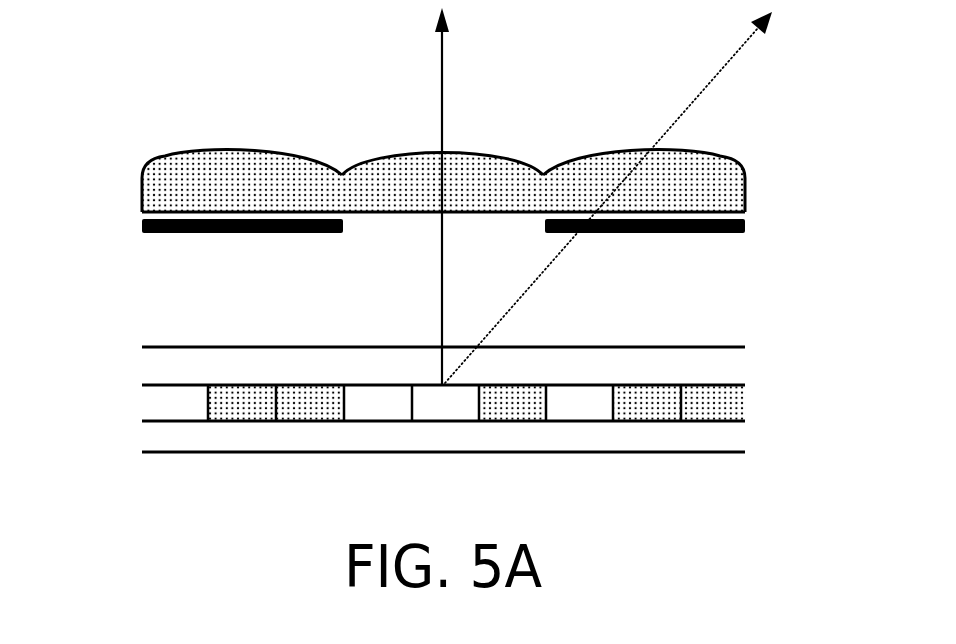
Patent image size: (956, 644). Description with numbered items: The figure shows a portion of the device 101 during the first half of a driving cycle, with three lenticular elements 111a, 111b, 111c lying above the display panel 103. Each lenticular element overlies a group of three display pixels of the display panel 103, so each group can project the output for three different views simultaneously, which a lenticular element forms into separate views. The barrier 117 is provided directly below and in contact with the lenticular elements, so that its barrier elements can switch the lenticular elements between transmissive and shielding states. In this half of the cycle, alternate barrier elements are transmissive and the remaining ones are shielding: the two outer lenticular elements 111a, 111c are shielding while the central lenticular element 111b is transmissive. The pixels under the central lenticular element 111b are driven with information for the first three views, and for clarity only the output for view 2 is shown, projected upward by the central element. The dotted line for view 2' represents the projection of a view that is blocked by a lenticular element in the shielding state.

The device 101 is at (137, 107).
The lenticular element 111a is at (240, 150).
The central lenticular element 111b is at (405, 150).
The lenticular element 111c is at (611, 150).
The barrier 117 is at (142, 227).
The display panel 103 is at (142, 405).
The view 2 is at (467, 196).
The view 2' is at (620, 197).